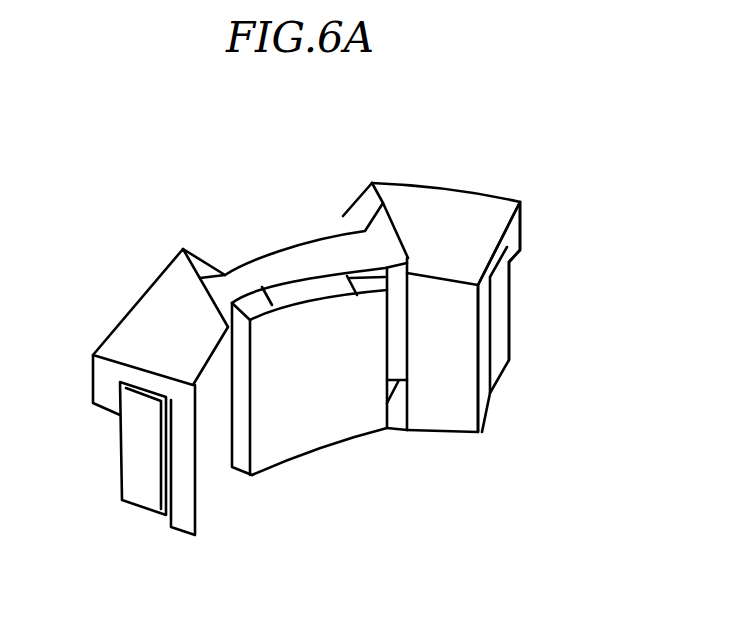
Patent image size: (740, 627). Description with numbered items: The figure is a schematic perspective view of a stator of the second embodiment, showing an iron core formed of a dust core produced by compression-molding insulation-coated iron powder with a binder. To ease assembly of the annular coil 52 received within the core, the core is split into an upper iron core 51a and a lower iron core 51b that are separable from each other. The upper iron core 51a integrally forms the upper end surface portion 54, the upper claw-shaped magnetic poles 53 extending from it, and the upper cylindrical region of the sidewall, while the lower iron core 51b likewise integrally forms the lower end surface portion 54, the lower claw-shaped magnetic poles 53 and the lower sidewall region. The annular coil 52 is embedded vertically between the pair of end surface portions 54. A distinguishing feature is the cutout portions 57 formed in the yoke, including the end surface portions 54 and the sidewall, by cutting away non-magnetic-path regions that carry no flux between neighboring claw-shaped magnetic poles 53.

The upper iron core 51a is at (524, 214).
The lower iron core 51b is at (338, 446).
The annular coil 52 is at (250, 277).
The claw-shaped magnetic poles 53 is at (302, 317).
The end surface portion 54 is at (434, 202).
The cutout portions 57 is at (343, 214).